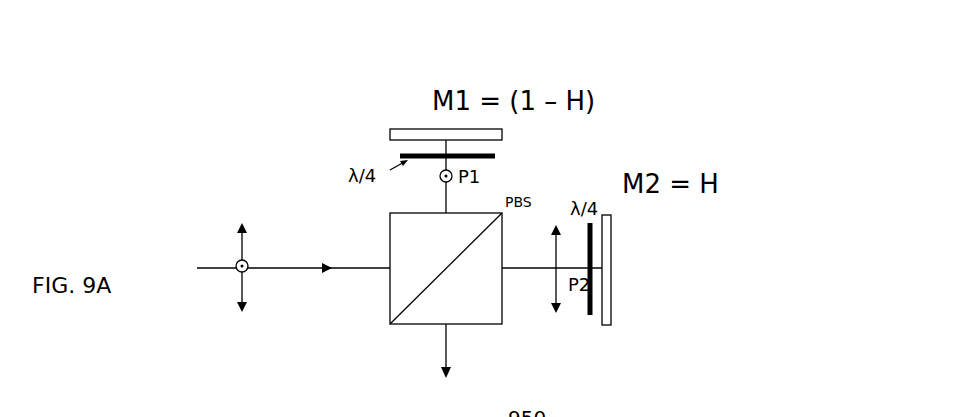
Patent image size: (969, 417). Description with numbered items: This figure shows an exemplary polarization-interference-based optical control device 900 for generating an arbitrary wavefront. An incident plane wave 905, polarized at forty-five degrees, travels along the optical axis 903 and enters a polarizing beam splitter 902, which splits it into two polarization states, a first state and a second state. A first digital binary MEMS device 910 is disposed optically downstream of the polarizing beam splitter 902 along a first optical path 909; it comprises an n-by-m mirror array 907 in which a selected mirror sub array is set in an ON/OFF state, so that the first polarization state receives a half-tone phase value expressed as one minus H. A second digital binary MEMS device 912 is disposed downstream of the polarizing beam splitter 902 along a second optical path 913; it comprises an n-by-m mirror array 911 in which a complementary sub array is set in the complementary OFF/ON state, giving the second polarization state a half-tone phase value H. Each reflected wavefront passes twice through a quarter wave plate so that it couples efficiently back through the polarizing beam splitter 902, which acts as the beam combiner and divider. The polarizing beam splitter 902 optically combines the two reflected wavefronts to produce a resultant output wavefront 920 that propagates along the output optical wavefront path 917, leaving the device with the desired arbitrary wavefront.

The optical control device 900 is at (782, 70).
The polarizing beam splitter 902 is at (465, 268).
The optical axis 903 is at (293, 280).
The incident plane wave 905 is at (262, 267).
The mirror array of M1 907 is at (471, 145).
The M1 optical path 909 is at (428, 176).
The first digital binary MEMS device 910 is at (424, 135).
The mirror array of M2 911 is at (609, 327).
The second digital binary MEMS device 912 is at (621, 273).
The M2 optical path 913 is at (552, 269).
The output optical wavefront path 917 is at (425, 347).
The resultant output wavefront 920 is at (468, 376).